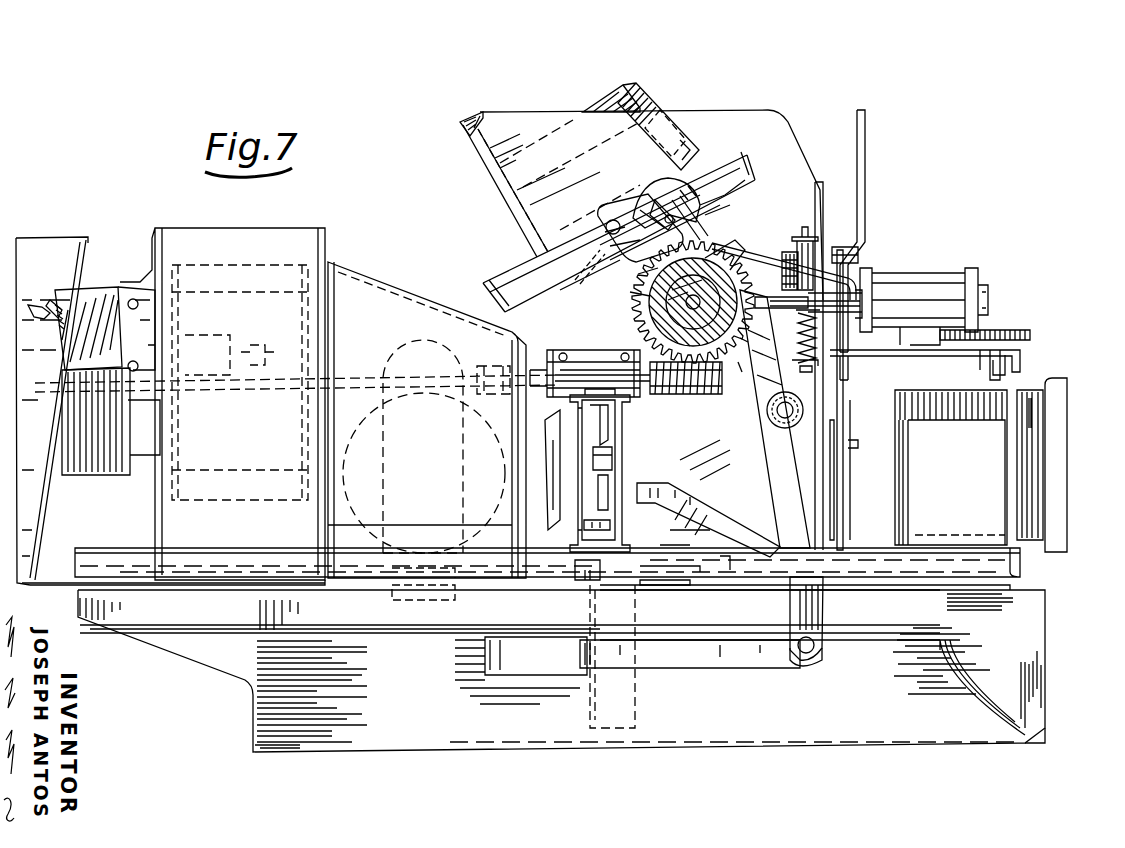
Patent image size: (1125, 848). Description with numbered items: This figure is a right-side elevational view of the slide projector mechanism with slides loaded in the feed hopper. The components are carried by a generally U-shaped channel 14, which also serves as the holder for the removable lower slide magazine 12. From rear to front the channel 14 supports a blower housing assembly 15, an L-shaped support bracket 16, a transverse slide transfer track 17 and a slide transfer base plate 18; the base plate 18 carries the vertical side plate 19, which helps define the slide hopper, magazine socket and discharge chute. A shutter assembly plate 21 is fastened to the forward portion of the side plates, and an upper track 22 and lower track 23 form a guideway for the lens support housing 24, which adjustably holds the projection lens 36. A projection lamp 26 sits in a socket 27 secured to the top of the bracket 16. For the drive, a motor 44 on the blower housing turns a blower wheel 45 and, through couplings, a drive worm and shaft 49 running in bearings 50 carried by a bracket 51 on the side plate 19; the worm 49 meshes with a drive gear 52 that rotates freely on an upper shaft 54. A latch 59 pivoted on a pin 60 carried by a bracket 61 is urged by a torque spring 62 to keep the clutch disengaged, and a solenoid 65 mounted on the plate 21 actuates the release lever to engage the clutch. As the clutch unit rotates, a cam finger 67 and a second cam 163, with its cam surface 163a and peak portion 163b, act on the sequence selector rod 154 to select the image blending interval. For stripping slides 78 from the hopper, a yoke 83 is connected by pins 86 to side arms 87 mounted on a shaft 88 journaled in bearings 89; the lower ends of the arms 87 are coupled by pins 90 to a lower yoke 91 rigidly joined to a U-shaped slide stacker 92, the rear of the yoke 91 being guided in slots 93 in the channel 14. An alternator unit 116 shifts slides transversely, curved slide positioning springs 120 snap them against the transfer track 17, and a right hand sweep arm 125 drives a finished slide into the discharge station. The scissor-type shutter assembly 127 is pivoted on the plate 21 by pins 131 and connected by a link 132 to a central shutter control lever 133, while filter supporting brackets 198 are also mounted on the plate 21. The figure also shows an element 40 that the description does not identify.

The lower slide magazine 12 is at (1028, 742).
The U-shaped channel 14 is at (198, 672).
The blower housing assembly 15 is at (260, 226).
The L-shaped support bracket 16 is at (348, 576).
The slide transfer track 17 is at (568, 561).
The slide transfer base plate 18 is at (728, 586).
The vertical side plate 19 is at (526, 110).
The shutter assembly plate 21 is at (885, 356).
The upper track 22 is at (452, 272).
The lower track 23 is at (1028, 562).
The lens support housing 24 is at (1005, 444).
The projection lamp 26 is at (407, 342).
The socket 27 is at (414, 610).
The projection lens 36 is at (1061, 376).
The gear 40 is at (1008, 330).
The motor 44 is at (78, 464).
The blower wheel 45 is at (263, 260).
The drive worm and shaft 49 is at (662, 396).
The bearings 50 is at (570, 368).
The bracket 51 is at (578, 284).
The drive gear 52 is at (628, 296).
The upper shaft 54 is at (634, 280).
The latch 59 is at (776, 262).
The pin 60 is at (814, 244).
The bracket 61 is at (793, 232).
The torque spring 62 is at (800, 364).
The solenoid 65 is at (927, 266).
The cam finger 67 is at (713, 224).
The slide 78 is at (609, 90).
The yoke 83 is at (590, 222).
The pins 86 is at (604, 212).
The side arm 87 is at (633, 212).
The shaft 88 is at (766, 426).
The bearings 89 is at (782, 426).
The pins 90 is at (810, 654).
The lower yoke 91 is at (707, 672).
The slide stacker 92 is at (638, 712).
The slots 93 is at (540, 674).
The alternator unit 116 is at (614, 468).
The slide positioning spring 120 is at (565, 420).
The sweep arm 125 is at (707, 516).
The shutter assembly 127 is at (844, 512).
The pins 131 is at (848, 492).
The link 132 is at (852, 416).
The central shutter control lever 133 is at (866, 140).
The sequence selector rod 154 is at (856, 272).
The second cam 163 is at (642, 332).
The cam surface 163a is at (740, 365).
The peak portion 163b is at (742, 337).
The filter supporting brackets 198 is at (811, 500).